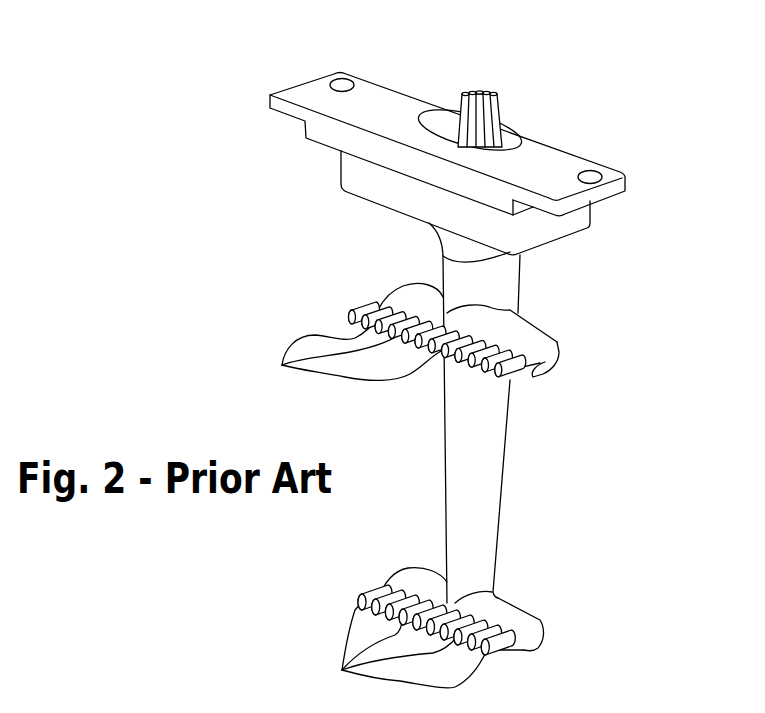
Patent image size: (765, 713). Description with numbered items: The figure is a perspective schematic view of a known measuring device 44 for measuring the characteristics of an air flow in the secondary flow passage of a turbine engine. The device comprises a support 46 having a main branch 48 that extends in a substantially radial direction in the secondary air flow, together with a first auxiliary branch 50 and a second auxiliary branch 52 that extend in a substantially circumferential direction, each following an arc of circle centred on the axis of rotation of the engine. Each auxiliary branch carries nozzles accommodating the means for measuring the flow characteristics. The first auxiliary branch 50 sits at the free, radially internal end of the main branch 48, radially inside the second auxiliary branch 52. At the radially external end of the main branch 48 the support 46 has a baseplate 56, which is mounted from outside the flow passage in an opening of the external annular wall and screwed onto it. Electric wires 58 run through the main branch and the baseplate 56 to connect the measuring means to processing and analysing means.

The measuring device 44 is at (623, 133).
The support 46 is at (500, 503).
The main branch 48 is at (485, 433).
The first auxiliary branch 50 is at (531, 613).
The second auxiliary branch 52 is at (542, 323).
The baseplate 56 is at (400, 122).
The electric wires 58 is at (497, 112).